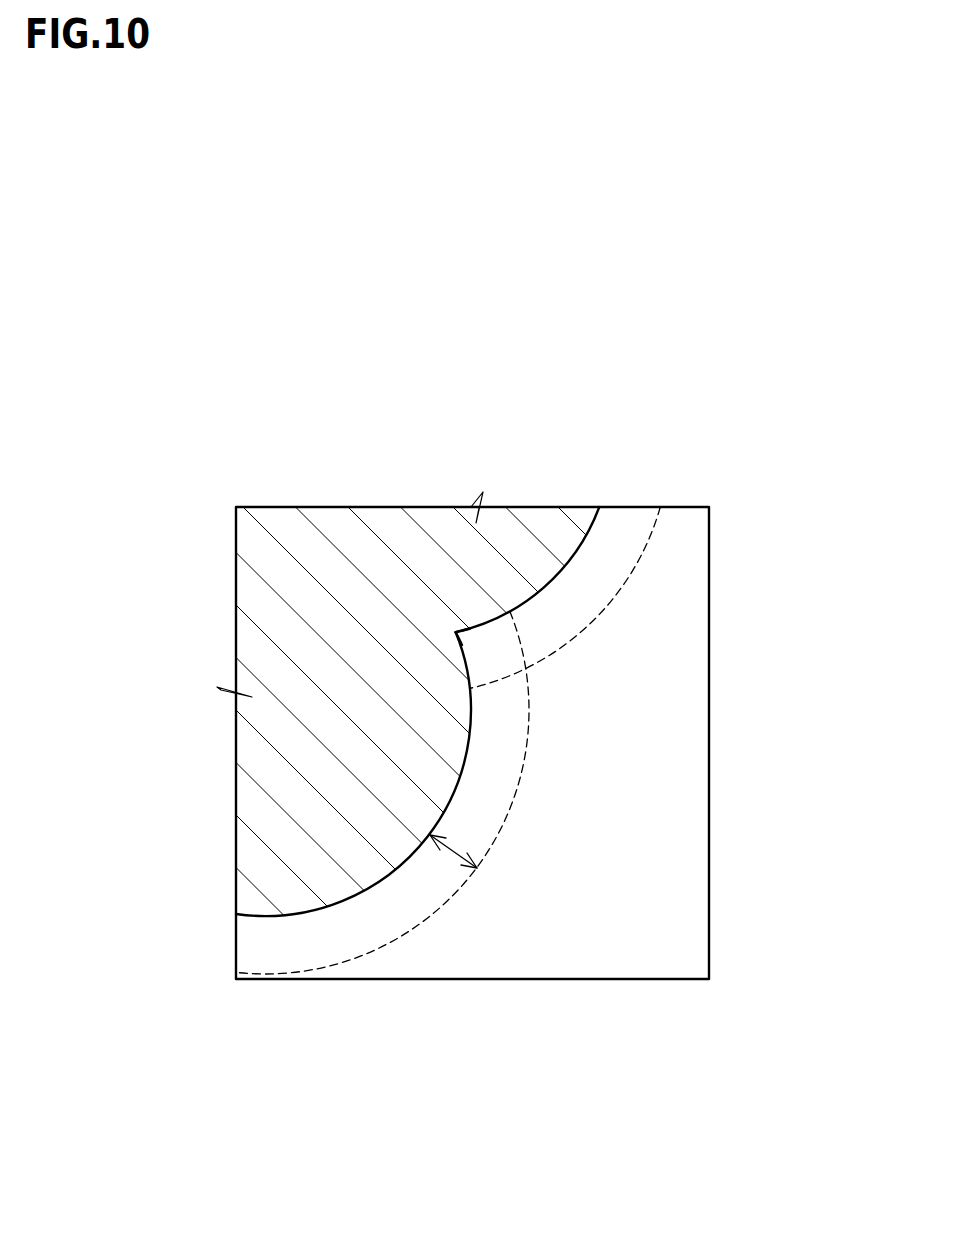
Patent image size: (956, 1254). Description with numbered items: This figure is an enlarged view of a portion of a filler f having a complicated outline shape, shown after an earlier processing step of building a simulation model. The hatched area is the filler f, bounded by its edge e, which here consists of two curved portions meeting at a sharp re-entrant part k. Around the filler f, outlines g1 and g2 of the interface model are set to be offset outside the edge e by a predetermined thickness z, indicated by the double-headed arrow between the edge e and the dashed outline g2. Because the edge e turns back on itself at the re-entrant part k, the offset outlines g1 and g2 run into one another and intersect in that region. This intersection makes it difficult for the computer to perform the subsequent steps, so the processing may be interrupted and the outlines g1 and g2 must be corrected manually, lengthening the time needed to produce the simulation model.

The filler f is at (323, 565).
The edge e is at (580, 548).
The re-entrant part k is at (462, 635).
The outline g1 is at (627, 582).
The outline g2 is at (420, 923).
The predetermined thickness z is at (453, 846).